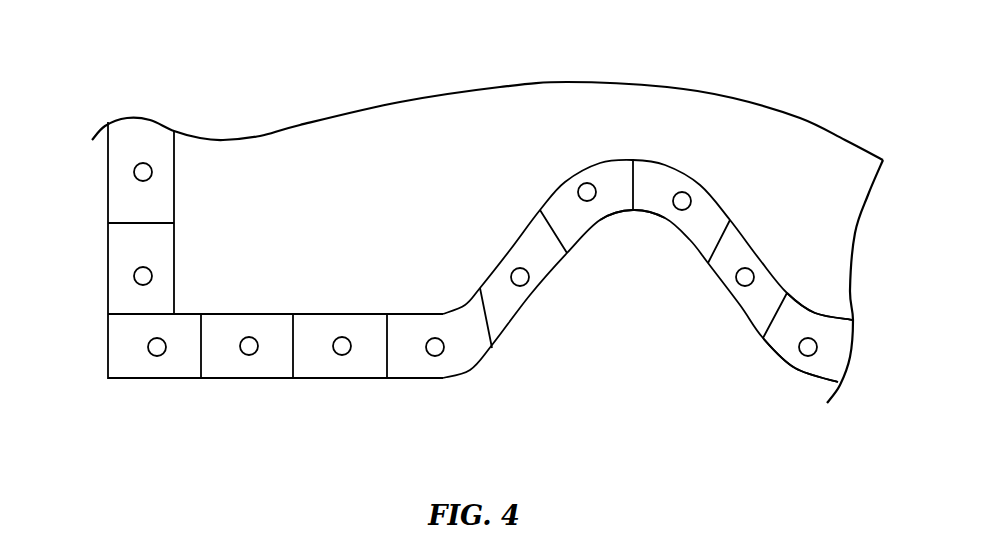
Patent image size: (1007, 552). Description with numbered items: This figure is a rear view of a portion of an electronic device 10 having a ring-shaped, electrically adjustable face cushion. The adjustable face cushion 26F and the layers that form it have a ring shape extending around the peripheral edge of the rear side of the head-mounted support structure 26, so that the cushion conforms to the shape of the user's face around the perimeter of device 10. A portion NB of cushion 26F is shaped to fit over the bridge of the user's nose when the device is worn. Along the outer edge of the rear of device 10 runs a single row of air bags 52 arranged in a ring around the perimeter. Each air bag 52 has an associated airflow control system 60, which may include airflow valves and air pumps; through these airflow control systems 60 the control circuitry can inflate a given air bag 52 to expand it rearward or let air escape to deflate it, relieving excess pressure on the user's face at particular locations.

The electronic device 10 is at (834, 60).
The head-mounted support structure 26 is at (70, 97).
The adjustable face cushion 26F is at (868, 320).
The air bags 52 is at (270, 370).
The airflow control system 60 is at (157, 356).
The portion of cushion NB is at (624, 306).